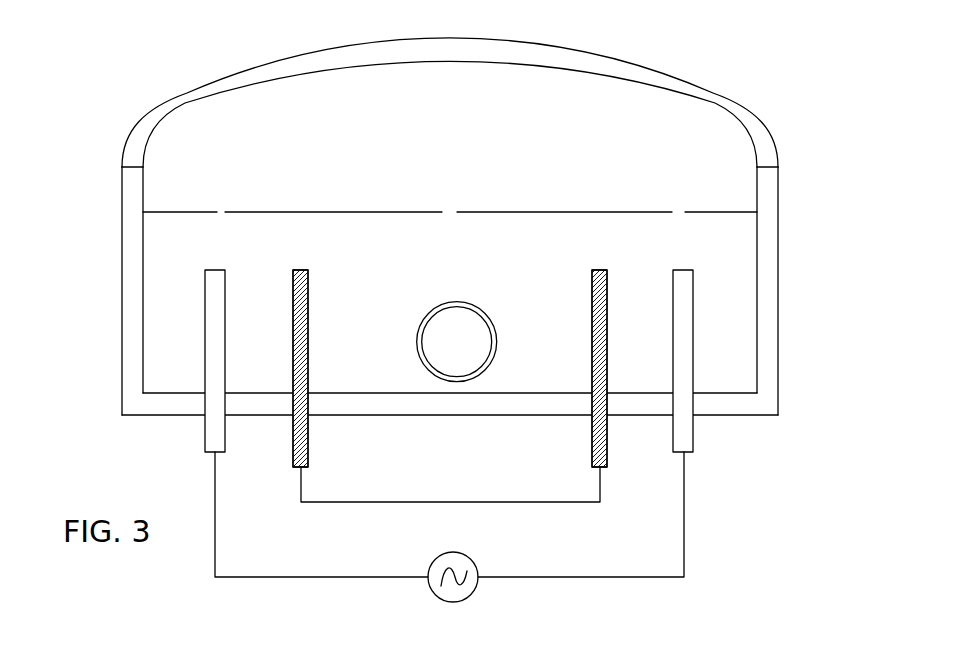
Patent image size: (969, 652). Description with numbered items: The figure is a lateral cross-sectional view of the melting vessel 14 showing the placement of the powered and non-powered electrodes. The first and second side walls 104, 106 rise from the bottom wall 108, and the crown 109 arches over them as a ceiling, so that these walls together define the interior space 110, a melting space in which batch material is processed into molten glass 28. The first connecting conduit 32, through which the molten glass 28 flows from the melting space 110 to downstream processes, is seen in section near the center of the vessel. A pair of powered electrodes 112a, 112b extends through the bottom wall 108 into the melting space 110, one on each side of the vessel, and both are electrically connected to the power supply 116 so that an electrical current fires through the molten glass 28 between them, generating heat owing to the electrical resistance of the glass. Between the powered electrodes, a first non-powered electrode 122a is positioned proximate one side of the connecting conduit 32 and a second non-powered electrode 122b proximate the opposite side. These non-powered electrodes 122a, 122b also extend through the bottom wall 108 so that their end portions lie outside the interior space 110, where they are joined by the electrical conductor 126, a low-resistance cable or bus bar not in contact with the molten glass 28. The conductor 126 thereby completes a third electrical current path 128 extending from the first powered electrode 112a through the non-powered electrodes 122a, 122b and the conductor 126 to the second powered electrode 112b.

The melting vessel 14 is at (123, 108).
The first side wall 104 is at (122, 195).
The second side wall 106 is at (777, 242).
The bottom wall 108 is at (327, 392).
The crown 109 is at (703, 86).
The interior space 110 is at (431, 248).
The molten glass 28 is at (540, 360).
The first connecting conduit 32 is at (450, 302).
The first powered electrode 112a is at (225, 278).
The second powered electrode 112b is at (673, 278).
The first non-powered electrode 122a is at (308, 300).
The second non-powered electrode 122b is at (592, 300).
The electrical conductor 126 is at (362, 517).
The third electrical current path 128 is at (393, 502).
The power supply 116 is at (442, 600).